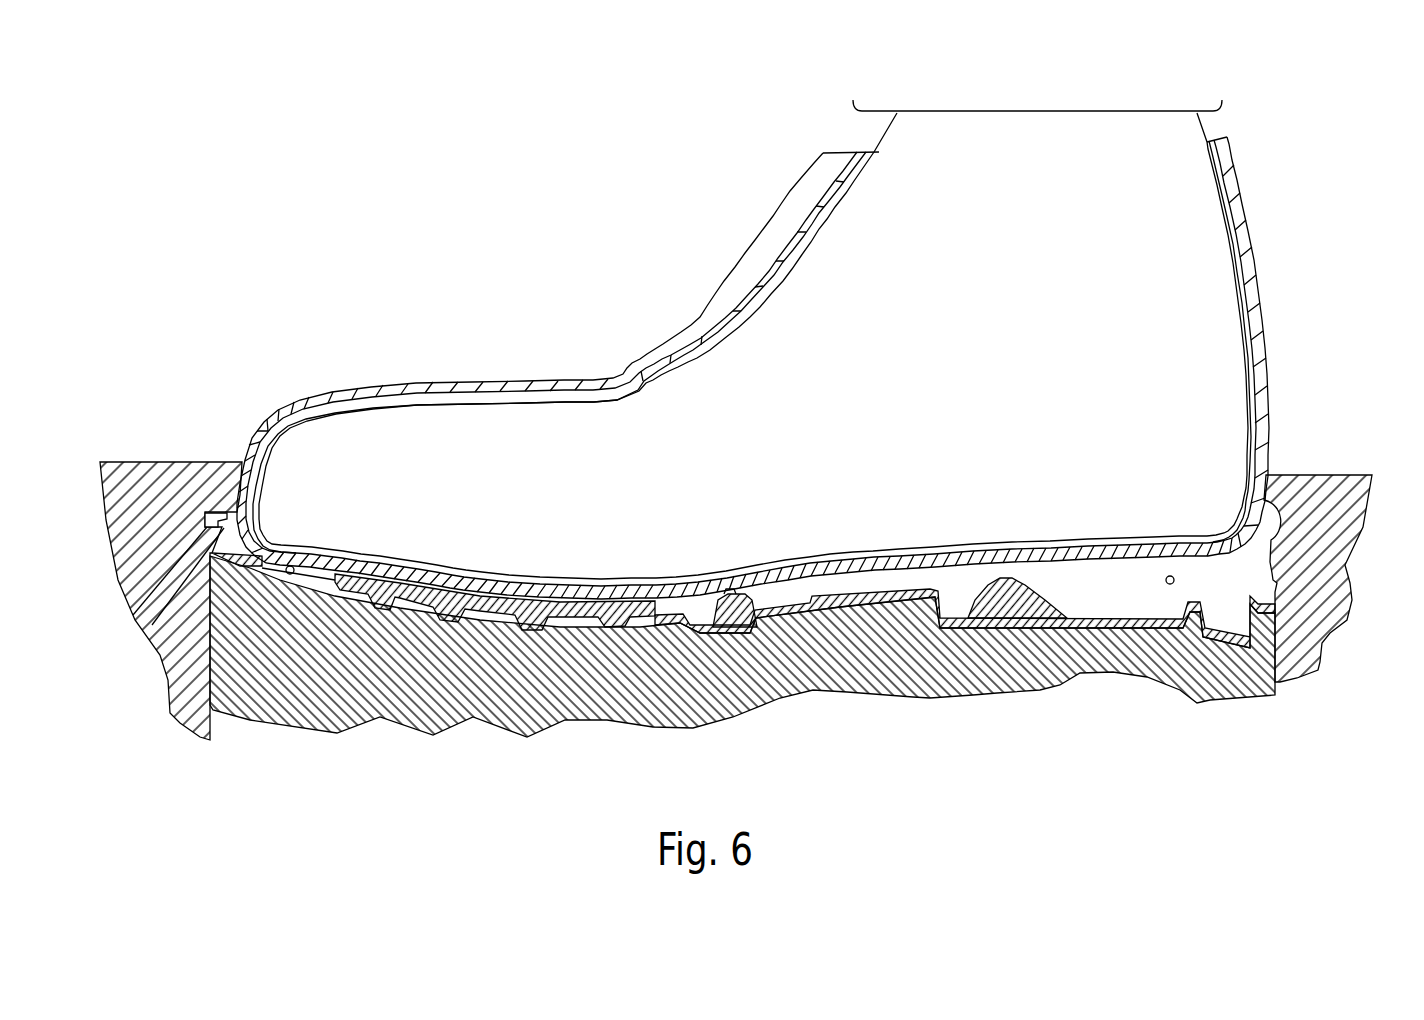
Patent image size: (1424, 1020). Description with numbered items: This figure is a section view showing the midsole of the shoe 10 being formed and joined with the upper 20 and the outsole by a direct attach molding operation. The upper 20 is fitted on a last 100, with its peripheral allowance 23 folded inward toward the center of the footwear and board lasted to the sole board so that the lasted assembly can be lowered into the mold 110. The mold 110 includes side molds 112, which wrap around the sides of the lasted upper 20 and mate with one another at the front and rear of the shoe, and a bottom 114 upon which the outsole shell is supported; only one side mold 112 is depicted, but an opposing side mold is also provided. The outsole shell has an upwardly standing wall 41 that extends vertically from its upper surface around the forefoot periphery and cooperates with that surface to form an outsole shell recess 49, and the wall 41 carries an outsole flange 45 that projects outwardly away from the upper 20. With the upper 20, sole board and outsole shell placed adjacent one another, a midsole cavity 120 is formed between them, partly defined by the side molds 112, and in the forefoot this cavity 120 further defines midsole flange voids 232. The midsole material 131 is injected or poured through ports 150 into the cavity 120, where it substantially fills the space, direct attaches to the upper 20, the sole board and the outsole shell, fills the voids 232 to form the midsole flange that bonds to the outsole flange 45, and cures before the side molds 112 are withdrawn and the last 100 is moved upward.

The shoe 10 is at (553, 175).
The upper 20 is at (358, 378).
The peripheral allowance 23 is at (270, 550).
The upwardly standing wall 41 is at (210, 560).
The outsole flange 45 is at (137, 605).
The outsole shell recess 49 is at (270, 563).
The last 100 is at (965, 128).
The mold 110 is at (1312, 455).
The side mold 112 is at (130, 495).
The bottom 114 is at (1160, 663).
The midsole cavity 120 is at (1122, 597).
The midsole material 131 is at (607, 593).
The ports 150 is at (738, 596).
The midsole flange void 232 is at (207, 510).